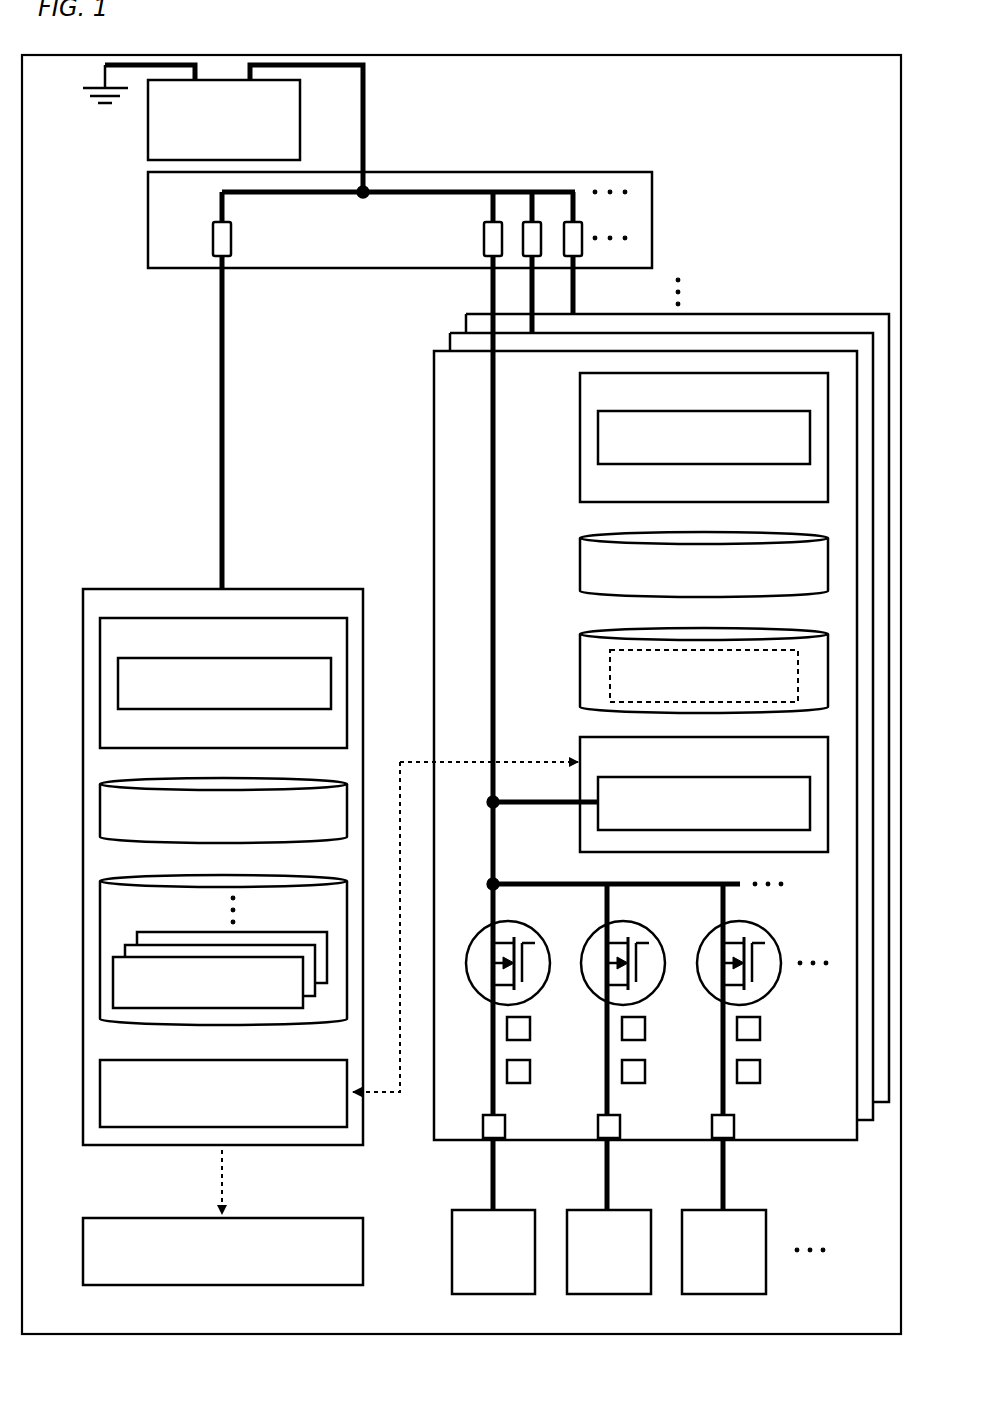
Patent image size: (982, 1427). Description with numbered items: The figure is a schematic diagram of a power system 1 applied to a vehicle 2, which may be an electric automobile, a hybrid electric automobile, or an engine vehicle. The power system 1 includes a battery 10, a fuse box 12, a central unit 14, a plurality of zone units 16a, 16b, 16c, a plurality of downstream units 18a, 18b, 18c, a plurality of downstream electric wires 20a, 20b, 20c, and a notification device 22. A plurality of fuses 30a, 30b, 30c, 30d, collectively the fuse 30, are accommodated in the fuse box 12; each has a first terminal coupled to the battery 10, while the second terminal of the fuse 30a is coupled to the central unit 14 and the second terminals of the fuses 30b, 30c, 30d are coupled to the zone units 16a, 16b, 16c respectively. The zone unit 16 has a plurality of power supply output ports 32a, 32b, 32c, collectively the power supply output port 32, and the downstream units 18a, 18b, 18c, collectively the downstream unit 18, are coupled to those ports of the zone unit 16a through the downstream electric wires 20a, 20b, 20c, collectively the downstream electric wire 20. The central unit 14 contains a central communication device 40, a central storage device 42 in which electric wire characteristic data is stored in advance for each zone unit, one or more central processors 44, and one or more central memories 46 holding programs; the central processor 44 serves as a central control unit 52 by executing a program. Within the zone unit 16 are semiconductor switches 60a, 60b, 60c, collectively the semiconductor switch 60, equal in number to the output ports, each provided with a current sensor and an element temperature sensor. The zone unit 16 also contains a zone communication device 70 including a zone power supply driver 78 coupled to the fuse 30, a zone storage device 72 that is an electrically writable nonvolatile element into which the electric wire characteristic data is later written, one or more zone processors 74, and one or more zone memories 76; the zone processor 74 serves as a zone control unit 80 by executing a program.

The power system 1 is at (752, 118).
The vehicle 2 is at (444, 60).
The battery 10 is at (148, 140).
The fuse box 12 is at (420, 172).
The central unit 14 is at (83, 600).
The zone unit 16 is at (607, 709).
The zone unit 16a is at (434, 380).
The zone unit 16b is at (450, 342).
The zone unit 16c is at (466, 318).
The downstream unit 18 is at (638, 1273).
The downstream unit 18a is at (493, 1294).
The downstream unit 18b is at (608, 1294).
The downstream unit 18c is at (723, 1294).
The downstream electric wire 20 is at (605, 1193).
The downstream electric wire 20a is at (498, 1192).
The downstream electric wire 20b is at (612, 1192).
The downstream electric wire 20c is at (728, 1192).
The notification device 22 is at (83, 1252).
The fuse 30 is at (404, 203).
The fuse 30a is at (213, 240).
The fuse 30b is at (484, 238).
The fuse 30c is at (523, 238).
The fuse 30d is at (564, 238).
The power supply output port 32 is at (555, 1158).
The power supply output port 32a is at (483, 1130).
The power supply output port 32b is at (598, 1130).
The power supply output port 32c is at (712, 1130).
The central communication device 40 is at (100, 1092).
The central storage device 42 is at (100, 908).
The central processor 44 is at (100, 638).
The central memory 46 is at (100, 810).
The central control unit 52 is at (118, 684).
The semiconductor switch 60 is at (832, 924).
The semiconductor switch 60a is at (548, 930).
The semiconductor switch 60b is at (663, 930).
The semiconductor switch 60c is at (778, 930).
The zone communication device 70 is at (580, 745).
The zone storage device 72 is at (580, 646).
The zone processor 74 is at (580, 392).
The zone memory 76 is at (580, 568).
The zone power supply driver 78 is at (598, 822).
The zone control unit 80 is at (598, 440).